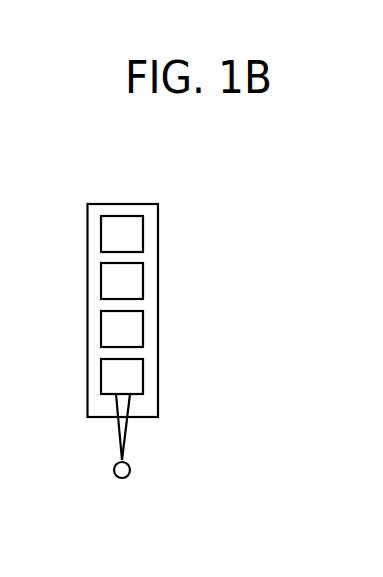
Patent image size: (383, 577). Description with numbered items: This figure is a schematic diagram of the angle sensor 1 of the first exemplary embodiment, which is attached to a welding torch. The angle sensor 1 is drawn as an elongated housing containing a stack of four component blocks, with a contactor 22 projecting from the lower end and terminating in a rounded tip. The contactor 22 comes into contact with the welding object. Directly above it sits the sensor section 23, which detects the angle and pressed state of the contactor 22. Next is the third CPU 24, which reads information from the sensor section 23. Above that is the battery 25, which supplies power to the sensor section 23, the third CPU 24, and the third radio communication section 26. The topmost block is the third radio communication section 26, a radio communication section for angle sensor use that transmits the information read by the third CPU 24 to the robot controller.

The angle sensor 1 is at (108, 204).
The contactor 22 is at (125, 450).
The sensor section 23 is at (143, 377).
The third CPU 24 is at (143, 330).
The battery 25 is at (143, 283).
The third radio communication section 26 is at (143, 233).